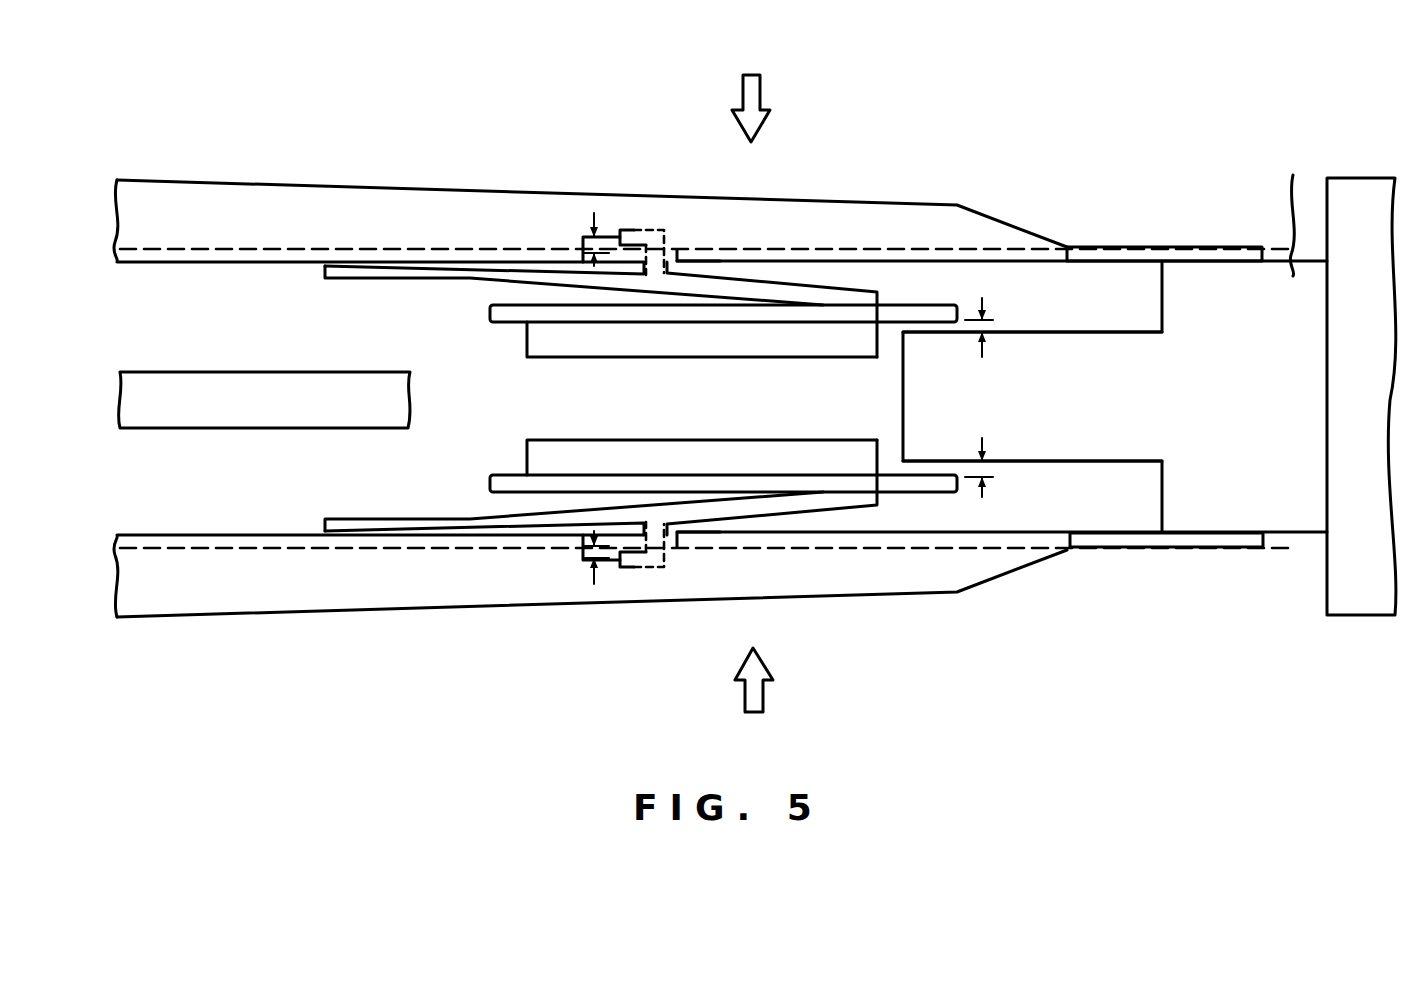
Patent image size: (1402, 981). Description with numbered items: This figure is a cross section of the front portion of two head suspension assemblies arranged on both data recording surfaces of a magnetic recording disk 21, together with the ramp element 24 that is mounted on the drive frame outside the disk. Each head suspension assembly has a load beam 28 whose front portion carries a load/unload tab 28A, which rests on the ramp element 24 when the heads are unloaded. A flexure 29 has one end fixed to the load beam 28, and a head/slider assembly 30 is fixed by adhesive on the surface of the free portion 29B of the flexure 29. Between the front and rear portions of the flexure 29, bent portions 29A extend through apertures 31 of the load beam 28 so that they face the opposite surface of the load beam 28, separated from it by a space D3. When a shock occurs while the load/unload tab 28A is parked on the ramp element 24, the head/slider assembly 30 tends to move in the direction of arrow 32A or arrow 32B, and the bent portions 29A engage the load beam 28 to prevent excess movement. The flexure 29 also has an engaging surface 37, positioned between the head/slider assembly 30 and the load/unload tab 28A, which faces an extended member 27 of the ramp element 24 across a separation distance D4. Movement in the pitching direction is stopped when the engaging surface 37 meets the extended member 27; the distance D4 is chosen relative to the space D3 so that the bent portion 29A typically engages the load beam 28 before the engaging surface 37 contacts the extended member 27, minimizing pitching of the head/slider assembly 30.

The magnetic recording disk 21 is at (283, 387).
The ramp element 24 is at (1300, 167).
The extended member 27 is at (1107, 428).
The load beam 28 is at (309, 205).
The load/unload tab 28A is at (1208, 253).
The flexure 29 is at (415, 270).
The bent portion 29A is at (633, 228).
The free portion 29B is at (667, 322).
The head/slider assembly 30 is at (595, 343).
The aperture 31 is at (683, 262).
The arrow 32A is at (762, 97).
The arrow 32B is at (765, 693).
The engaging surface 37 is at (897, 320).
The space between bent portion and load beam D3 is at (545, 622).
The separation distance between engaging surface and extended member D4 is at (988, 327).